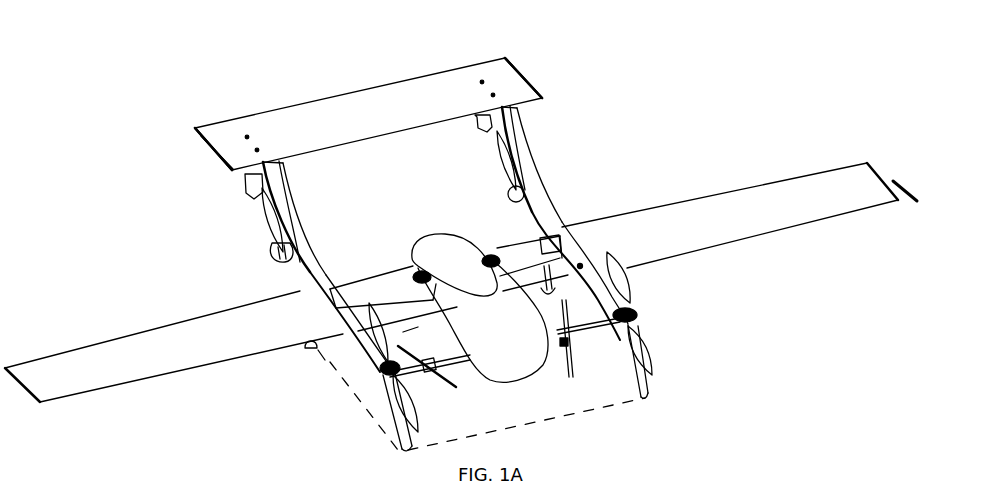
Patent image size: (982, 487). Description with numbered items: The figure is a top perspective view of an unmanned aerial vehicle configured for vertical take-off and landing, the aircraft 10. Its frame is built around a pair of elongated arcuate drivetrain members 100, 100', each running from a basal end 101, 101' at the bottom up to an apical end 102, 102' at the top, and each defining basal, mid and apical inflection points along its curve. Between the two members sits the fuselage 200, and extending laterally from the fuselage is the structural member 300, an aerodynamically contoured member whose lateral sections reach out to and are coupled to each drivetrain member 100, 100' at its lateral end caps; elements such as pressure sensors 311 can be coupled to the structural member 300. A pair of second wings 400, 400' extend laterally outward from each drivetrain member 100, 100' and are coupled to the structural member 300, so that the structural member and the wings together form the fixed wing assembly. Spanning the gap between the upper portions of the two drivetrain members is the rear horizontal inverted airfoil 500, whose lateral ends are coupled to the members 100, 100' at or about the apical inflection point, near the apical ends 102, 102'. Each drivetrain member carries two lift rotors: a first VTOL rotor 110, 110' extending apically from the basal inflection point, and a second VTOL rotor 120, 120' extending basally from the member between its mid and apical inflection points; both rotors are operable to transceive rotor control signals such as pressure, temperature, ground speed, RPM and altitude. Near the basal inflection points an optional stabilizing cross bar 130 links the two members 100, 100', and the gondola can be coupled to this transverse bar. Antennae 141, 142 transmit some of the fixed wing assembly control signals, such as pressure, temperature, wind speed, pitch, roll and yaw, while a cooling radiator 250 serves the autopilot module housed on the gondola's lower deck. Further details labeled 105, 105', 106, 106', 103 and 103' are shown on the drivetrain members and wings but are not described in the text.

The aircraft 10 is at (75, 35).
The rear horizontal inverted airfoil 500 is at (343, 121).
The apical end 102 is at (185, 143).
The apical end 102' is at (557, 69).
The boom 105 is at (303, 218).
The boom 105' is at (552, 164).
The flap 106 is at (185, 176).
The flap 106' is at (448, 142).
The second VTOL rotor 120 is at (214, 244).
The second VTOL rotor 120' is at (557, 179).
The elongated arcuate drivetrain member 100 is at (279, 312).
The elongated arcuate drivetrain member 100' is at (580, 257).
The first VTOL rotor 110 is at (345, 367).
The first VTOL rotor 110' is at (668, 313).
The basal end 101 is at (368, 412).
The basal end 101' is at (682, 380).
The second wing 400 is at (286, 338).
The second wing 400' is at (739, 215).
The wing fairing 103 is at (286, 366).
The wing fairing 103' is at (620, 246).
The structural member 300 is at (390, 285).
The cooling radiator 250 is at (410, 264).
The fuselage 200 is at (483, 321).
The pressure sensors 311 is at (540, 240).
The stabilizing cross bar 130 is at (432, 367).
The antenna 142 is at (455, 390).
The antenna 141 is at (568, 373).